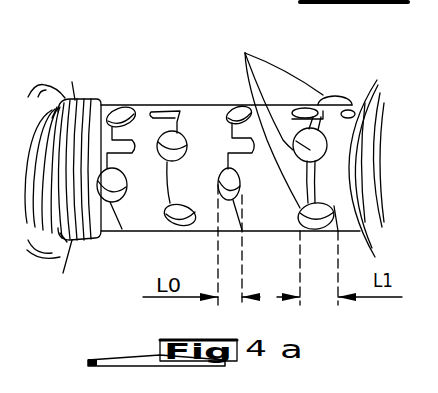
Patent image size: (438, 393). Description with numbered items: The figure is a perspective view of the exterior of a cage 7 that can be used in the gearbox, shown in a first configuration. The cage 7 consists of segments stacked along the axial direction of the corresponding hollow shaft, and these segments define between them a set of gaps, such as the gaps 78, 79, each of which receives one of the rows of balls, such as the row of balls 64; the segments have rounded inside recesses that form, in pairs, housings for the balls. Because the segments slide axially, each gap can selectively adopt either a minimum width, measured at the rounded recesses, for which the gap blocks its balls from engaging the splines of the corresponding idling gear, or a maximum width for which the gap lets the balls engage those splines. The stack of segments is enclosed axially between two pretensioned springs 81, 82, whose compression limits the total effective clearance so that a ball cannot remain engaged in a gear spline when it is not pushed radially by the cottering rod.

The cage 7 is at (163, 76).
The gap 78 is at (230, 130).
The row of balls 64 is at (300, 132).
The gap 79 is at (316, 177).
The pretensioned spring 82 is at (360, 103).
The pretensioned spring 81 is at (70, 240).